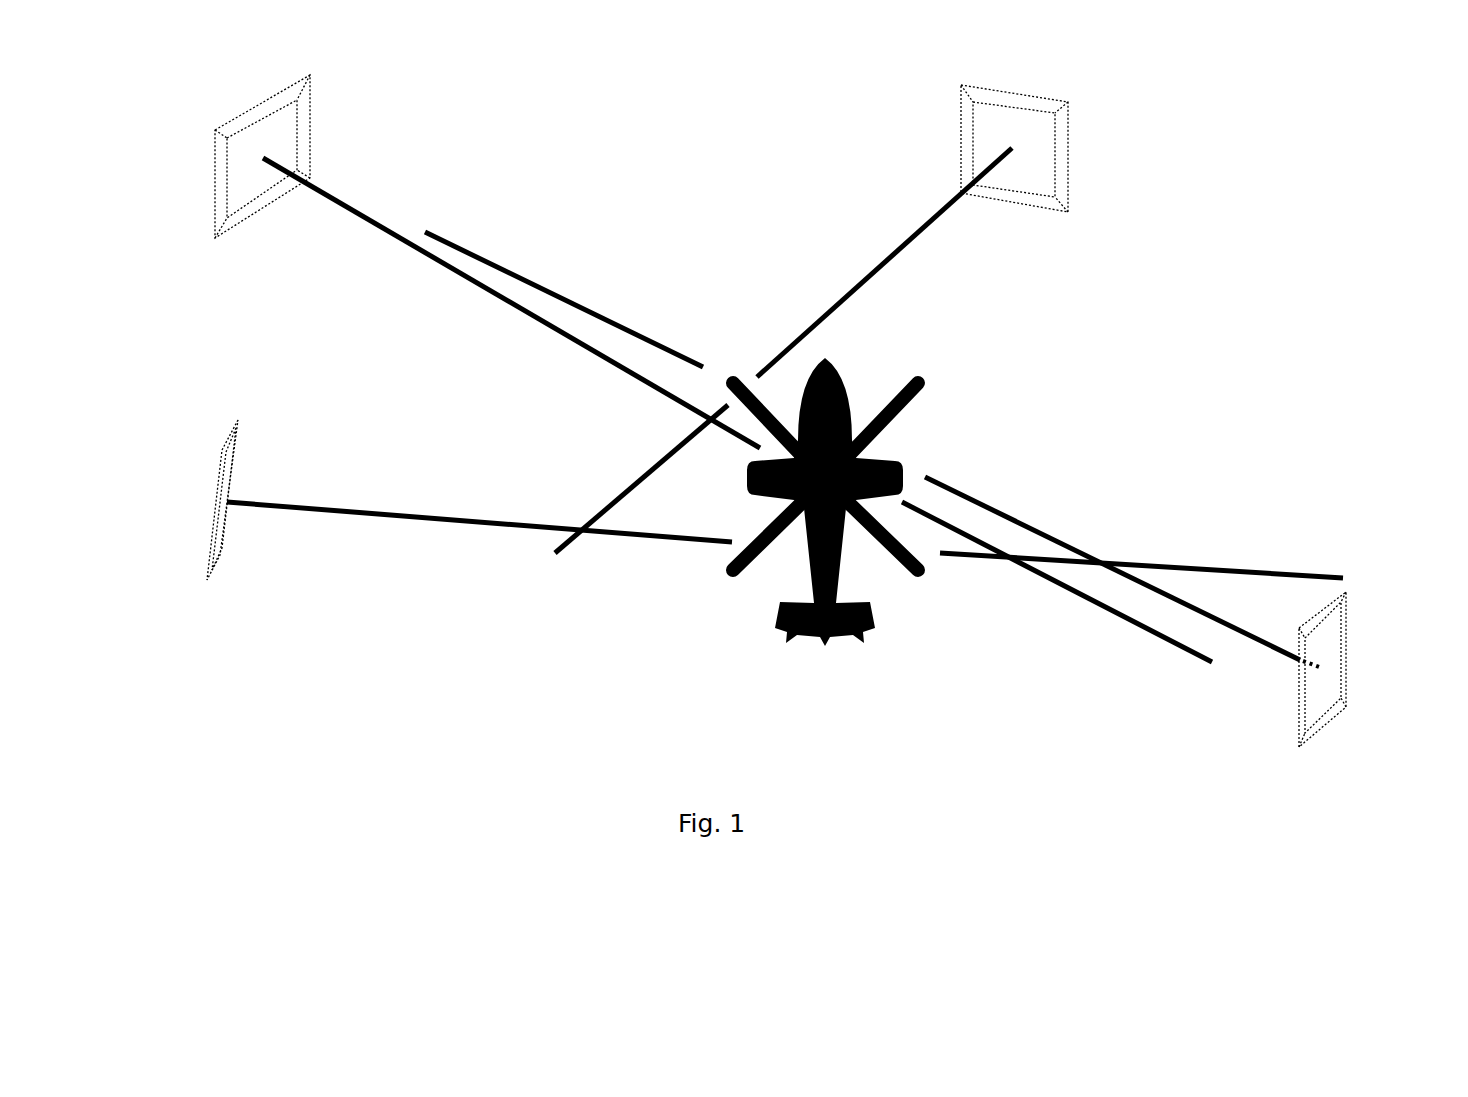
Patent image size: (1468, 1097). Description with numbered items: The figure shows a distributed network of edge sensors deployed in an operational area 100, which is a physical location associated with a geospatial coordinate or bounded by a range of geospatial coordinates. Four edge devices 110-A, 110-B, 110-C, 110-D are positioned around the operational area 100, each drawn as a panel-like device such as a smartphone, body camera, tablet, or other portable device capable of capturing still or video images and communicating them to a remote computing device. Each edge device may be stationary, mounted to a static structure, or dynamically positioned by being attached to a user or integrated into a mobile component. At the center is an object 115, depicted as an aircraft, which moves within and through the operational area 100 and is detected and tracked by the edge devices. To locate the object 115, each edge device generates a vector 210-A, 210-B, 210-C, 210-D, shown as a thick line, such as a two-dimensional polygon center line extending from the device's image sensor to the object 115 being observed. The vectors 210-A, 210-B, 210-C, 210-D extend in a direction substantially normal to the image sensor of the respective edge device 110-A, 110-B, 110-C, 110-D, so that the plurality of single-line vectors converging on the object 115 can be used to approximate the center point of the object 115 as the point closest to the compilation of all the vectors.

The operational area 100 is at (128, 767).
The edge device 110-A is at (222, 150).
The edge device 110-B is at (1079, 148).
The edge device 110-C is at (1379, 640).
The edge device 110-D is at (186, 452).
The object 115 is at (825, 502).
The vector 210-A is at (737, 462).
The vector 210-B is at (774, 350).
The vector 210-C is at (873, 419).
The vector 210-D is at (785, 593).